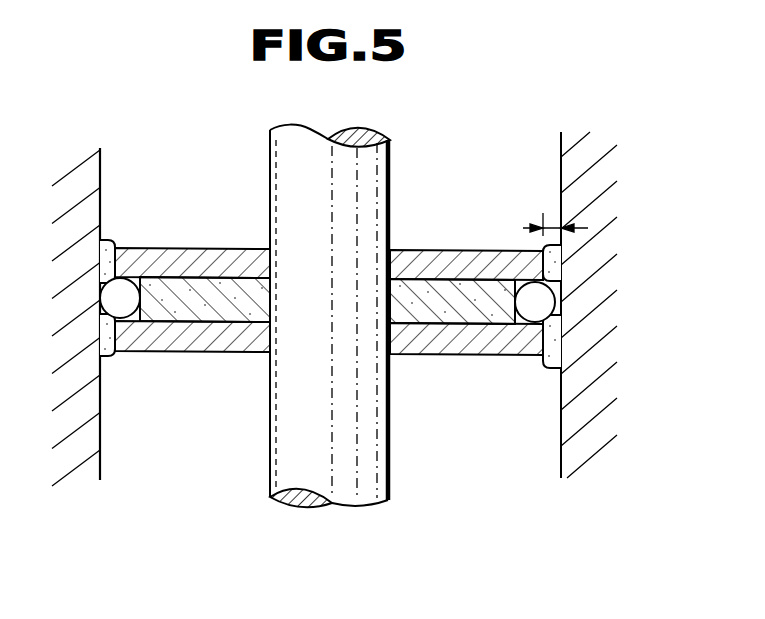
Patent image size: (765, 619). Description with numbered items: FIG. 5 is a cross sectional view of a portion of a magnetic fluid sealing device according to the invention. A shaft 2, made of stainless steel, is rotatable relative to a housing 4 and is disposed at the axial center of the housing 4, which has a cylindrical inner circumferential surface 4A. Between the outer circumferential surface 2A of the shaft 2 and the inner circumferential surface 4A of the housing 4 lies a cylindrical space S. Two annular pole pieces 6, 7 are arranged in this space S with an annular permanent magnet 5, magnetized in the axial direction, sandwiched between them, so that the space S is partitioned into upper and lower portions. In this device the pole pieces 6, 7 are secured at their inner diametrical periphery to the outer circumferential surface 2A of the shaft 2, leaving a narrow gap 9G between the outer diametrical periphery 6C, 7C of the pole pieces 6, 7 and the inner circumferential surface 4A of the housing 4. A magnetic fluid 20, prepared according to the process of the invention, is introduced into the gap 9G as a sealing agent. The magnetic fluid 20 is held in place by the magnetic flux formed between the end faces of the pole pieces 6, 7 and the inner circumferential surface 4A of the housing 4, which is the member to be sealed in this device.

The shaft 2 is at (362, 310).
The outer circumferential surface of the shaft 2A is at (392, 173).
The housing 4 is at (612, 305).
The inner circumferential surface of the housing 4A is at (553, 182).
The annular permanent magnet 5 is at (474, 322).
The annular pole piece 6 is at (165, 255).
The outer diametrical periphery of the pole piece 6C is at (558, 263).
The annular pole piece 7 is at (420, 348).
The outer diametrical periphery of the pole piece 7C is at (544, 368).
The narrow gap 9G is at (550, 226).
The magnetic fluid 20 is at (591, 340).
The cylindrical space S is at (197, 446).